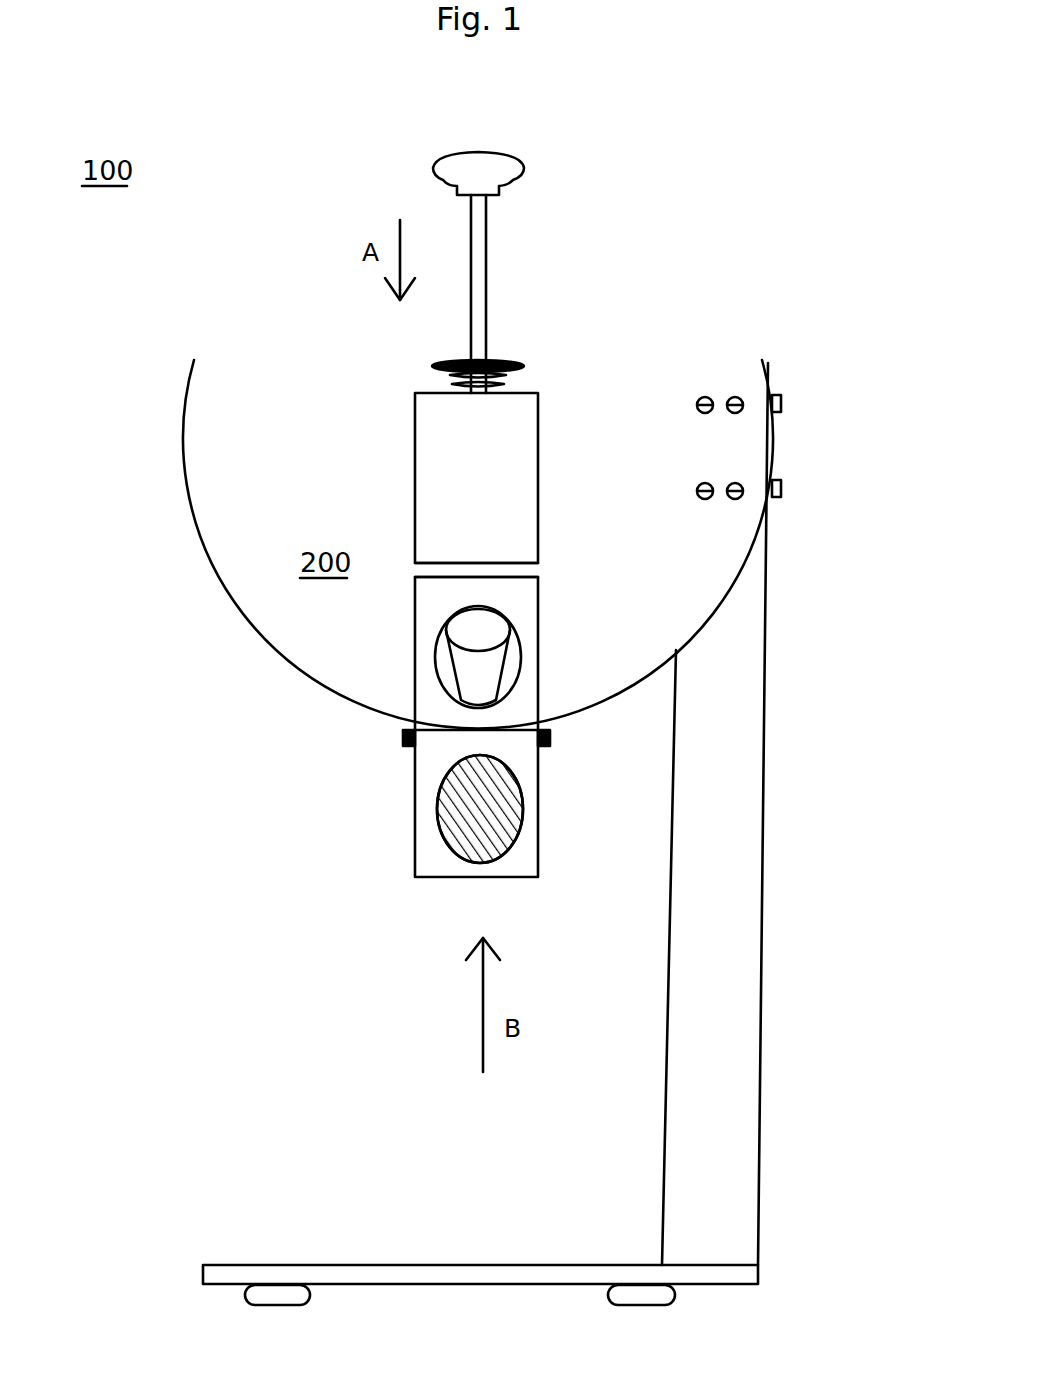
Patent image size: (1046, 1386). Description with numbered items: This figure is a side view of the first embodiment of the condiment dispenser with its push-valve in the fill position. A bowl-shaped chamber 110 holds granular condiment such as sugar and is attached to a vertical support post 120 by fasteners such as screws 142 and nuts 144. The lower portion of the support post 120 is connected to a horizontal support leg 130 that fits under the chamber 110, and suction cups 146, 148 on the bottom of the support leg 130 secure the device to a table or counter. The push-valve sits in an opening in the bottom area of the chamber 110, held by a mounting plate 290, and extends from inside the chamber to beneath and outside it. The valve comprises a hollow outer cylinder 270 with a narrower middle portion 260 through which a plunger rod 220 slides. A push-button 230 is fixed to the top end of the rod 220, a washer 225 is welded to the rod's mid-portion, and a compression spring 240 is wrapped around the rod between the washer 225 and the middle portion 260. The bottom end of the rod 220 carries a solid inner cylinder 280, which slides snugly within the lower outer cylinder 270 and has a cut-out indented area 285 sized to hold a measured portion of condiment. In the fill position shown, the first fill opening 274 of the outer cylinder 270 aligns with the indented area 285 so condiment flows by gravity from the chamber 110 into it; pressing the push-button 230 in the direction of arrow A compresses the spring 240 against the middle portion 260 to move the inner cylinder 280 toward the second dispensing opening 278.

The chamber 110 is at (192, 498).
The vertical support post 120 is at (738, 875).
The horizontal support leg 130 is at (487, 1284).
The screws 142 is at (780, 395).
The nuts 144 is at (706, 494).
The suction cup 146 is at (276, 1305).
The suction cup 148 is at (645, 1305).
The plunger rod 220 is at (479, 257).
The washer 225 is at (445, 362).
The push-button 230 is at (490, 167).
The compression spring 240 is at (500, 383).
The middle portion 260 is at (532, 570).
The hollow outer cylinder 270 is at (532, 678).
The first fill opening 274 is at (433, 665).
The second dispensing opening 278 is at (434, 820).
The solid inner cylinder 280 is at (512, 798).
The cut-out indented area 285 is at (484, 667).
The mounting plate 290 is at (551, 739).